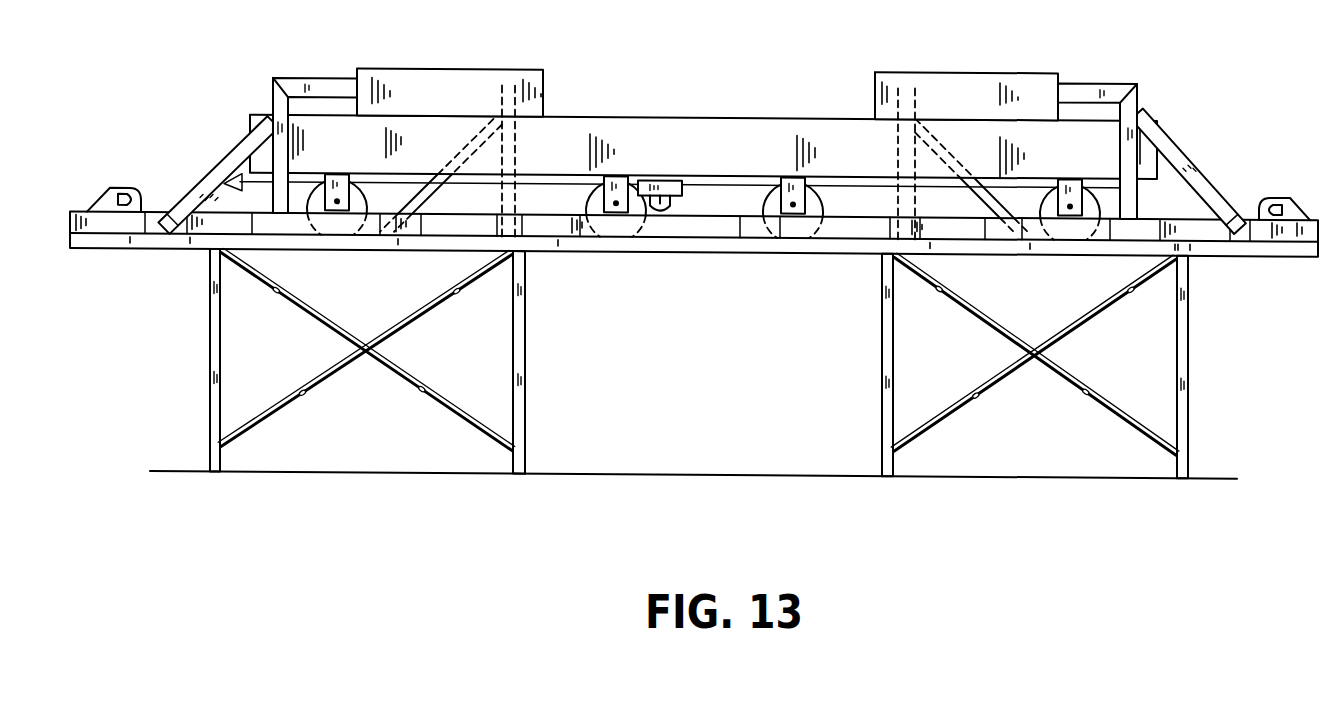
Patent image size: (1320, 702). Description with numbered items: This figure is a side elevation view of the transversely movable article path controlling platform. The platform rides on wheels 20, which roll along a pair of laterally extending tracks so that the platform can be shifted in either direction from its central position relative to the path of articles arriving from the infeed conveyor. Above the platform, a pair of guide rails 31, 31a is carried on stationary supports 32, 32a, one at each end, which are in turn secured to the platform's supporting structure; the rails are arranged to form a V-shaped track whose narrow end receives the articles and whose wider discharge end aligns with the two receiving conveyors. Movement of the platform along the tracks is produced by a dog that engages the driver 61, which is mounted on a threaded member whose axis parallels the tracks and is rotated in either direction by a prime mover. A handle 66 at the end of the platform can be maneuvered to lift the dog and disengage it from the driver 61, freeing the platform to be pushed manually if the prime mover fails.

The wheels 20 is at (322, 209).
The guide rail 31 is at (415, 66).
The guide rail 31a is at (927, 76).
The stationary support 32 is at (332, 75).
The stationary support 32a is at (1138, 89).
The driver 61 is at (671, 200).
The handle 66 is at (247, 175).